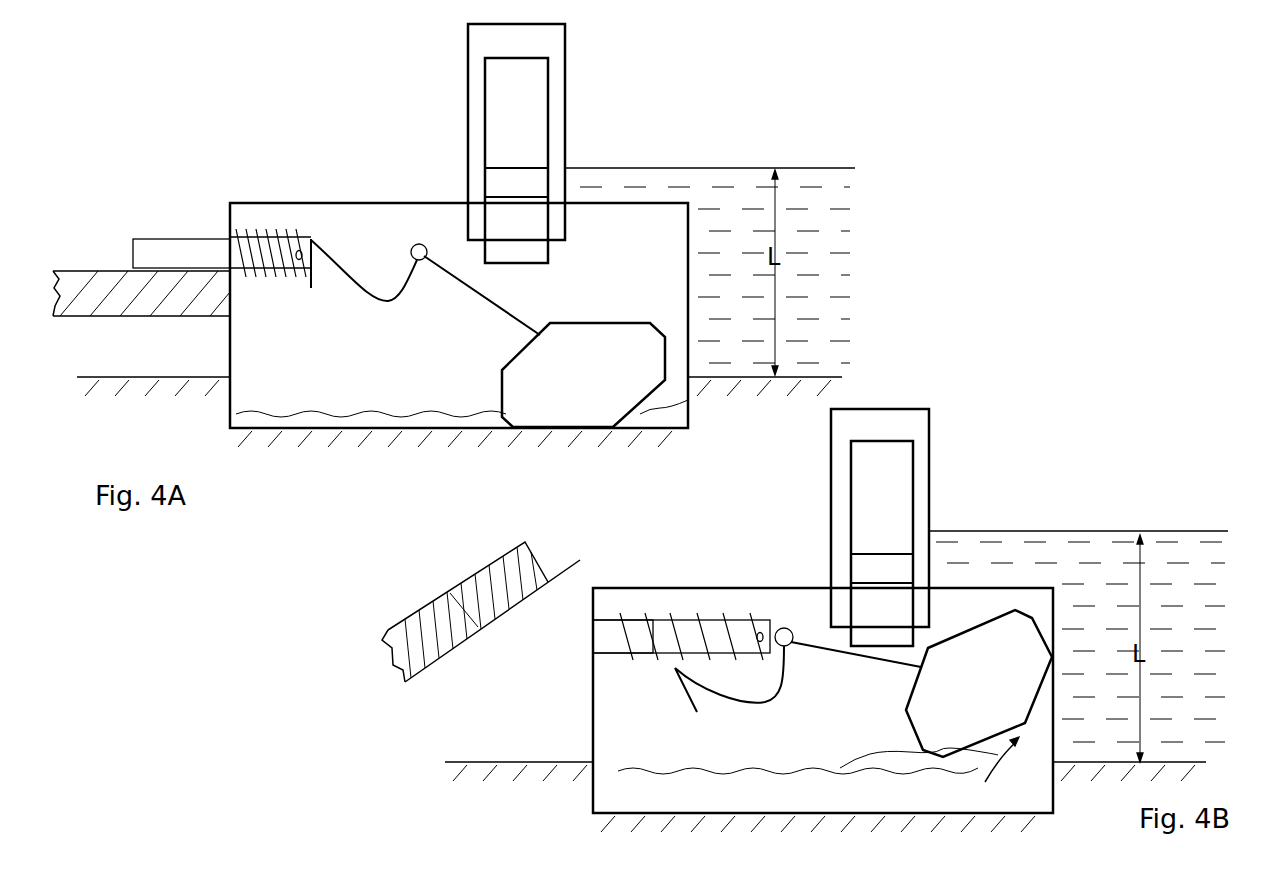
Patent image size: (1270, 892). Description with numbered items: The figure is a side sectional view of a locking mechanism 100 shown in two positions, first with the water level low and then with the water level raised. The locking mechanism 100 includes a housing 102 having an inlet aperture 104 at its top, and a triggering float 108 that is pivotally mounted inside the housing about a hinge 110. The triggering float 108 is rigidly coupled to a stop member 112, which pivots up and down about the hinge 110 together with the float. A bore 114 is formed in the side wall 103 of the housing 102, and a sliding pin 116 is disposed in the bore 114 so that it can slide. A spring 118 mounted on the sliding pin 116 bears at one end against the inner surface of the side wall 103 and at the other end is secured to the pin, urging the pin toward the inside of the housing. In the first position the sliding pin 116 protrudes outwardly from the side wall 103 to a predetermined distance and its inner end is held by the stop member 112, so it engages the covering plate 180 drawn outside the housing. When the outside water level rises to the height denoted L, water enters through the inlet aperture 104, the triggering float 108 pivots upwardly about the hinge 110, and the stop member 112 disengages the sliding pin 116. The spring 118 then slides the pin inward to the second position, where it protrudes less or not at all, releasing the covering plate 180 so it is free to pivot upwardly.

In FIG. 4A, the locking mechanism 100 is at (275, 132).
In FIG. 4B, the locking mechanism 100 is at (590, 550).
In FIG. 4A, the housing 102 is at (618, 243).
In FIG. 4A, the side wall 103 is at (230, 350).
In FIG. 4B, the side wall 103 is at (593, 736).
In FIG. 4A, the inlet aperture 104 is at (517, 118).
In FIG. 4A, the triggering float 108 is at (605, 343).
In FIG. 4B, the triggering float 108 is at (937, 698).
In FIG. 4A, the hinge 110 is at (415, 244).
In FIG. 4B, the hinge 110 is at (782, 628).
In FIG. 4A, the stop member 112 is at (363, 295).
In FIG. 4B, the stop member 112 is at (726, 701).
In FIG. 4A, the bore 114 is at (229, 258).
In FIG. 4B, the bore 114 is at (593, 646).
In FIG. 4A, the sliding pin 116 is at (150, 257).
In FIG. 4B, the sliding pin 116 is at (623, 620).
In FIG. 4A, the spring 118 is at (282, 235).
In FIG. 4B, the spring 118 is at (702, 620).
In FIG. 4A, the lid / cover plate 180 is at (108, 317).
In FIG. 4B, the lid / cover plate 180 is at (455, 650).